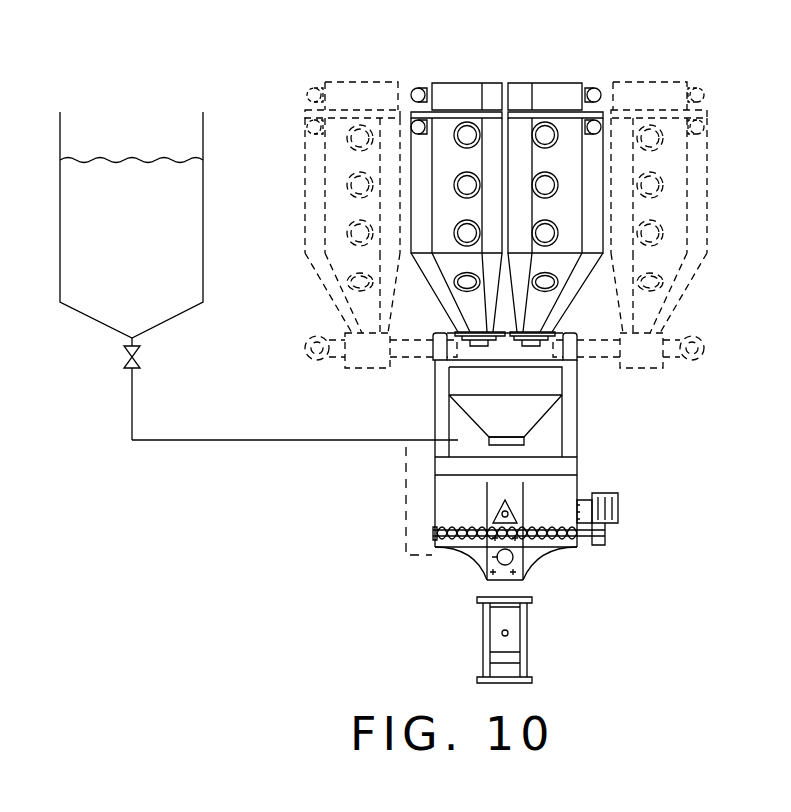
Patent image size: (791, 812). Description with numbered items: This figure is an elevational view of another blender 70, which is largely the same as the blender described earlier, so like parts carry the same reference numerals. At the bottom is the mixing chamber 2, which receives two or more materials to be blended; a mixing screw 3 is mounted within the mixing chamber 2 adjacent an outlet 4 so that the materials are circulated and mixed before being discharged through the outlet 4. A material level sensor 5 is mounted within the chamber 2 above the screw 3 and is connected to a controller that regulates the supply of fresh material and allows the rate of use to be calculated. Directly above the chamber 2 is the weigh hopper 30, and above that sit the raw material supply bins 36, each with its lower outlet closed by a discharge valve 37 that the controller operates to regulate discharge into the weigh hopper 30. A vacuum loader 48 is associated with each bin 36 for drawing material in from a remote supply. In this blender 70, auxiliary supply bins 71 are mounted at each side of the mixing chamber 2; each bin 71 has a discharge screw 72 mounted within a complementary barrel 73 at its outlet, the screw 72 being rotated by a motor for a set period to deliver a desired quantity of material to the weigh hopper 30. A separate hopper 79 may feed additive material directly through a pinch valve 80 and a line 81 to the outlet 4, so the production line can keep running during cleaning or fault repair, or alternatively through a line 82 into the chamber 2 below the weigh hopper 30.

The blender 70 is at (594, 39).
The auxiliary supply bin 71 is at (350, 83).
The vacuum loader 48 is at (393, 92).
The raw material supply bin 36 is at (444, 128).
The barrel 73 is at (455, 338).
The discharge screw 72 is at (372, 372).
The weigh hopper 30 is at (461, 380).
The discharge valve 37 is at (529, 347).
The mixing chamber 2 is at (577, 428).
The material level sensor 5 is at (510, 510).
The mixing screw 3 is at (558, 500).
The outlet 4 is at (493, 566).
The separate hopper 79 is at (225, 209).
The pinch valve 80 is at (140, 356).
The line 82 is at (412, 440).
The line 81 is at (406, 560).